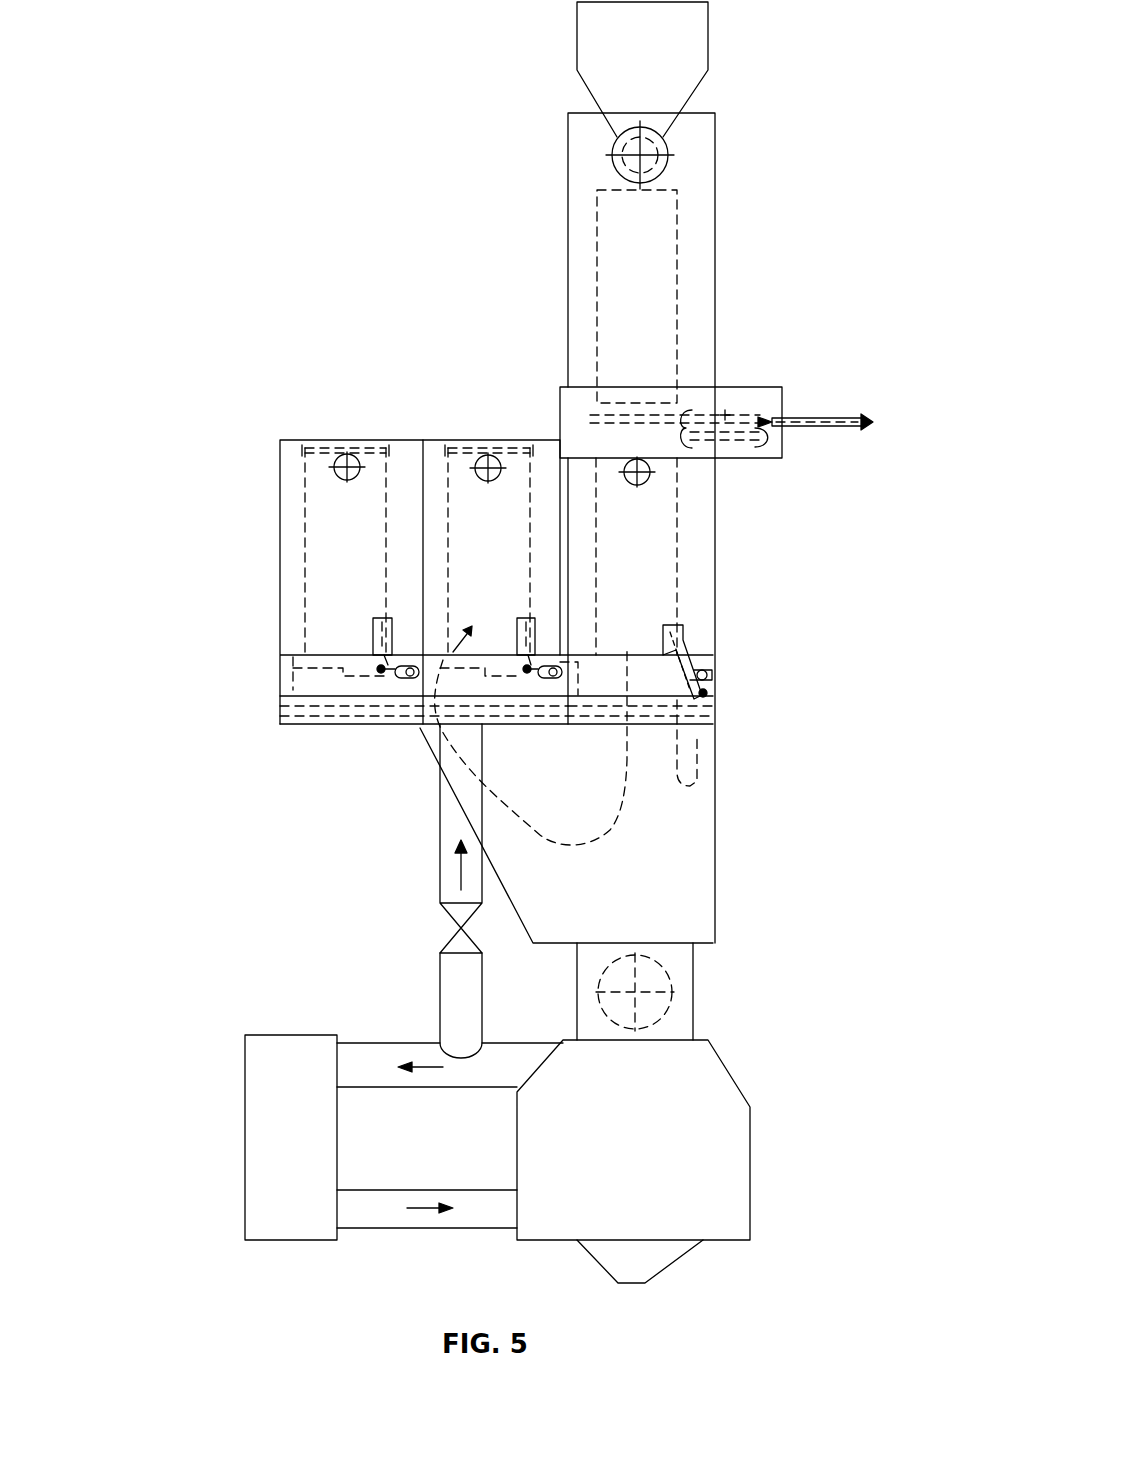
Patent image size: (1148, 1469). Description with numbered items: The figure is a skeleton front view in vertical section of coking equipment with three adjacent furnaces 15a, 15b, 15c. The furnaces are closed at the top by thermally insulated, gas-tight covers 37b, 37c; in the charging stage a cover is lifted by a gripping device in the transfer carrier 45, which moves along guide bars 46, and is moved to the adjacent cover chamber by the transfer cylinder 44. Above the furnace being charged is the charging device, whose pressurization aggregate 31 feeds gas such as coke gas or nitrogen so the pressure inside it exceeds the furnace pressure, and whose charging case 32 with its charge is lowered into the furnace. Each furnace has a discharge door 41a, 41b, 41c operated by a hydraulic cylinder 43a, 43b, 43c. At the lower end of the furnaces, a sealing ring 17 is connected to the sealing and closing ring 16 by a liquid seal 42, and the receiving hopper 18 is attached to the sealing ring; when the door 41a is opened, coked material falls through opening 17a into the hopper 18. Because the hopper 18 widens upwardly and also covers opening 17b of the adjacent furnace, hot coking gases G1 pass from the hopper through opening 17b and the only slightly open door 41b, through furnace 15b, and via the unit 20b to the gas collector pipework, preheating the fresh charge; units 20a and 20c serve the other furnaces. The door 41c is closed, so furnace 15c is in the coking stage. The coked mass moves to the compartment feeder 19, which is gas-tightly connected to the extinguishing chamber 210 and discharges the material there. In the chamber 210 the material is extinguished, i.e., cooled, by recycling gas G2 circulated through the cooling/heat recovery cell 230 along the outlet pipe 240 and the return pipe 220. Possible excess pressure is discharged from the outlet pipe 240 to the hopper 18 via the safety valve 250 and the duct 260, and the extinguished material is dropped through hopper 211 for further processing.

The pressurization aggregate 31 is at (612, 172).
The charging case 32 is at (600, 242).
The guide bars 46 is at (657, 418).
The transfer carrier 45 is at (745, 417).
The transfer cylinder 44 is at (807, 417).
The unit 20a is at (650, 473).
The unit 20b is at (470, 457).
The unit 20c is at (342, 475).
The furnace 15a is at (673, 572).
The furnace 15b is at (462, 572).
The furnace 15c is at (318, 568).
The cover 37b is at (483, 445).
The cover 37c is at (327, 445).
The hydraulic cylinder 43a is at (690, 657).
The hydraulic cylinder 43b is at (520, 622).
The hydraulic cylinder 43c is at (372, 640).
The discharge door 41a is at (698, 752).
The discharge door 41b is at (500, 678).
The discharge door 41c is at (297, 658).
The sealing and closing ring 16 is at (278, 680).
The sealing ring 17 is at (283, 720).
The liquid seal 42 is at (307, 723).
The opening 17a is at (643, 715).
The opening 17b is at (500, 715).
The hot coking gases G1 is at (518, 808).
The receiving hopper 18 is at (698, 857).
The duct 260 is at (452, 855).
The safety valve 250 is at (455, 943).
The compartment feeder 19 is at (688, 1001).
The outlet pipe 240 is at (388, 1052).
The cooling/heat recovery cell 230 is at (255, 1176).
The recycling gas G2 is at (422, 1203).
The extinguishing chamber 210 is at (745, 1185).
The return pipe 220 is at (377, 1222).
The hopper 211 is at (647, 1267).